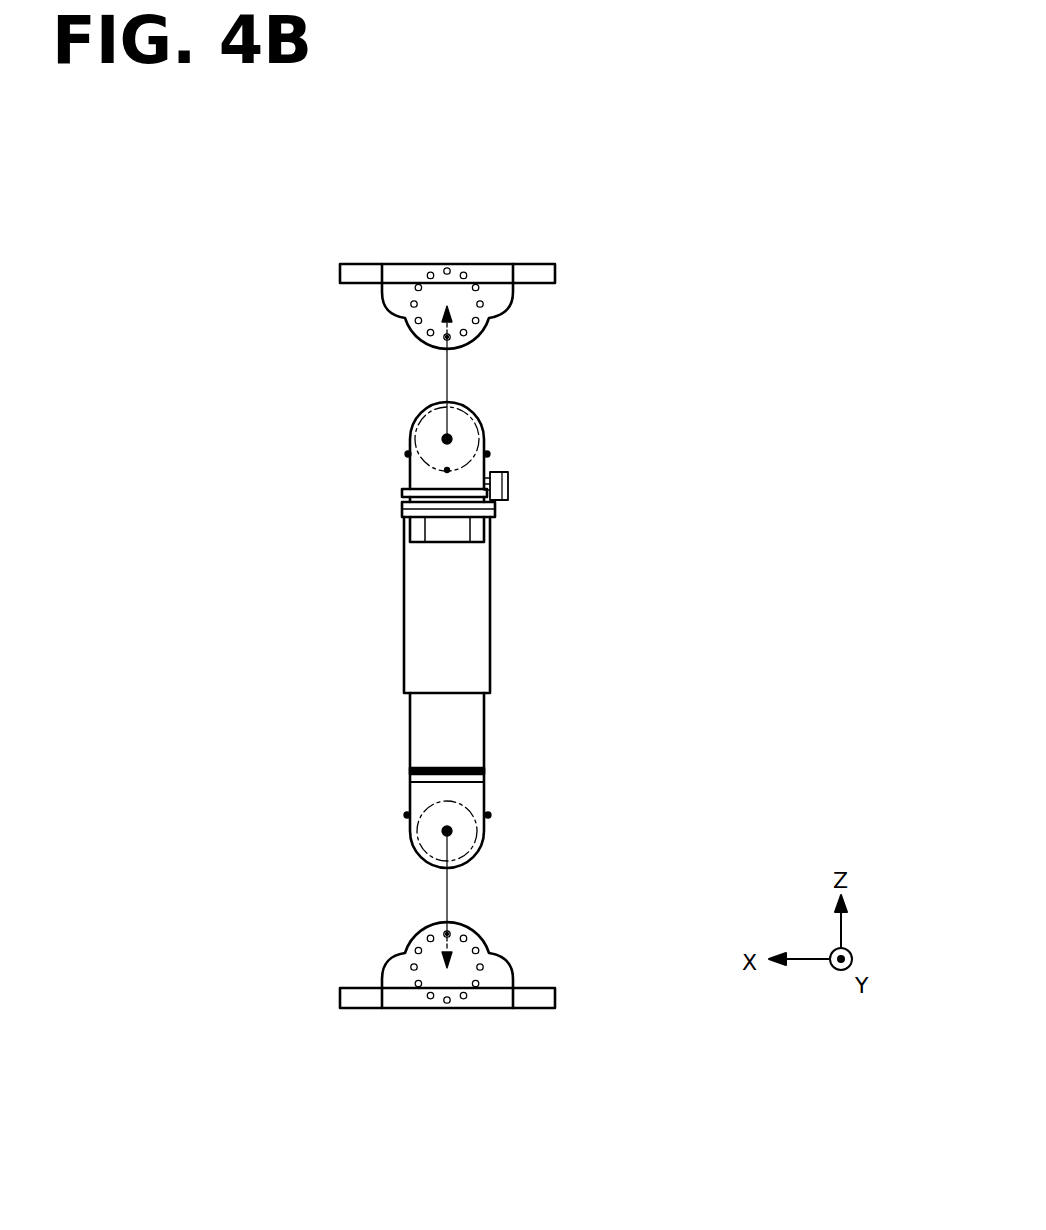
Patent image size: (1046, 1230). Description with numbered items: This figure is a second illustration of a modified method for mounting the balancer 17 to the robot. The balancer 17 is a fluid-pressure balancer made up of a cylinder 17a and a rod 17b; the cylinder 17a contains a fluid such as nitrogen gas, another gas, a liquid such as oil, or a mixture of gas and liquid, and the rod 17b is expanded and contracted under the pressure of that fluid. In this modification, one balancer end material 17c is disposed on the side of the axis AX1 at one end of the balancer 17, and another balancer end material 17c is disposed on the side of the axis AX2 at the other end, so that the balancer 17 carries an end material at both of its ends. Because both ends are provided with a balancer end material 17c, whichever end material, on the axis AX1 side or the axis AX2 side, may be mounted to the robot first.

The balancer 17 is at (653, 290).
The cylinder 17a is at (492, 592).
The rod 17b is at (487, 740).
The balancer end material 17c is at (492, 318).
The axis AX1 is at (484, 433).
The axis AX2 is at (484, 829).